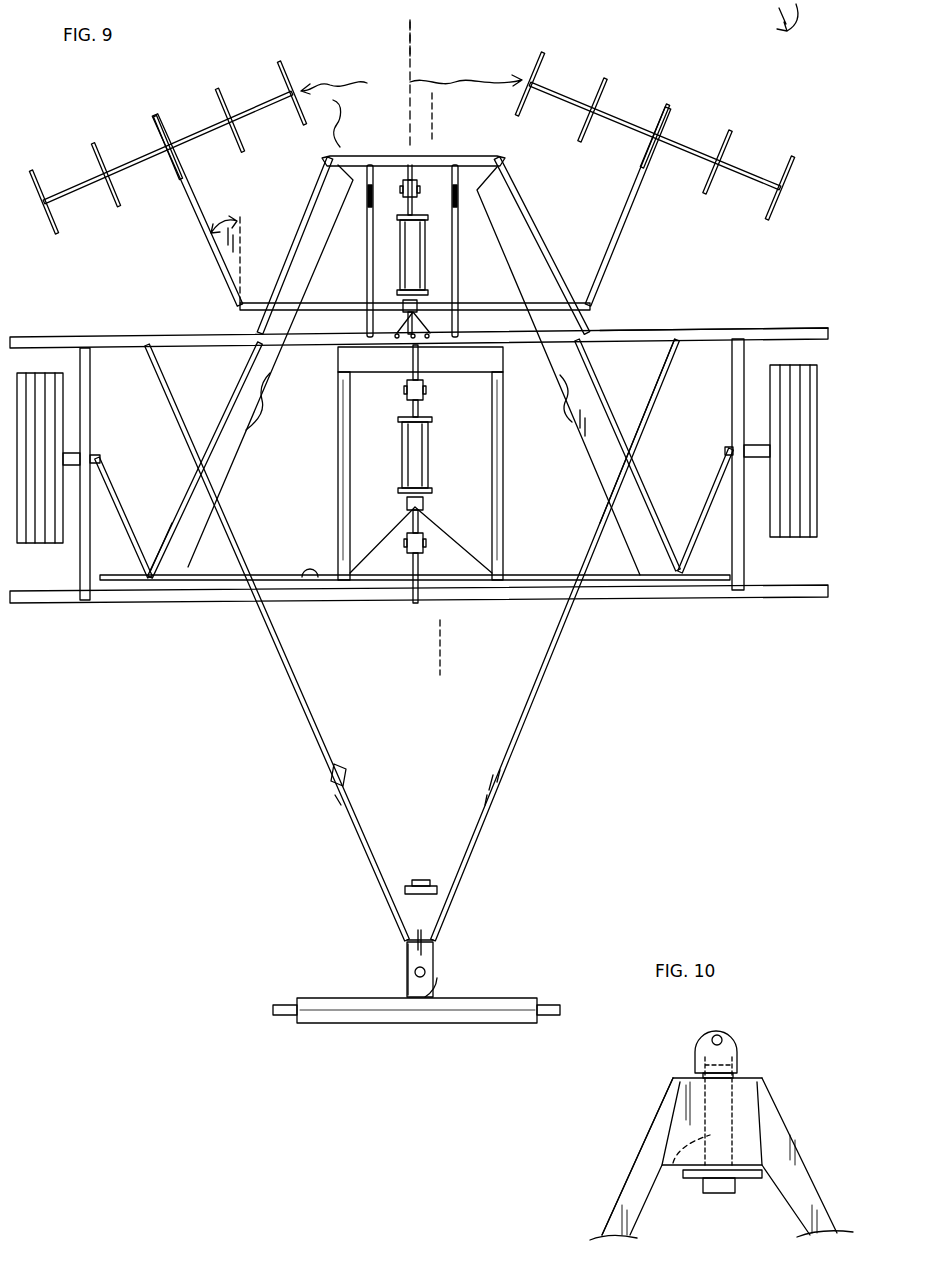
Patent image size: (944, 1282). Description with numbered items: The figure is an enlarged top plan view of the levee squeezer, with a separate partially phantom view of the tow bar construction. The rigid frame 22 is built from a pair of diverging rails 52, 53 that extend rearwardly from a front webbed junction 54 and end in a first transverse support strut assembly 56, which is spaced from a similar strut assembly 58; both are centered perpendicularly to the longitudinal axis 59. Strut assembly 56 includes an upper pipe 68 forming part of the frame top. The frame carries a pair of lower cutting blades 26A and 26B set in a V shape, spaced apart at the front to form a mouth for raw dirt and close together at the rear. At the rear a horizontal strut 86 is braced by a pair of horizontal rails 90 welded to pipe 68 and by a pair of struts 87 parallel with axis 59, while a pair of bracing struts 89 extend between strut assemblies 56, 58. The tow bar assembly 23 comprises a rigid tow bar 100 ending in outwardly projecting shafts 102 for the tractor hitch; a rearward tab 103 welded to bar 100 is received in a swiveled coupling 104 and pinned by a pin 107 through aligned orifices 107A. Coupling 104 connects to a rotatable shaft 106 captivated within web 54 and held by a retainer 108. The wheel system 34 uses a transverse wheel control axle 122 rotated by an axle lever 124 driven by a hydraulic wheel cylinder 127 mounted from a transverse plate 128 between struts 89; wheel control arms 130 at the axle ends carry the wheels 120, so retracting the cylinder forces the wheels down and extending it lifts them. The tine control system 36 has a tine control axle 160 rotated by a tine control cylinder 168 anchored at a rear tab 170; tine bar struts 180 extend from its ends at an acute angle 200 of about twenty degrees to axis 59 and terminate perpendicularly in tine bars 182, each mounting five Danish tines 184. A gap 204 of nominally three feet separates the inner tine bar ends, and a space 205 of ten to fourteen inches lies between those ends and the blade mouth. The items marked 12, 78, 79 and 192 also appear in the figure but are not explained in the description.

In FIG. 9, the section line 12 is at (425, 116).
In FIG. 9, the frame 22 is at (714, 316).
In FIG. 9, the tow bar assembly 23 is at (331, 947).
In FIG. 10, the tow bar assembly 23 is at (662, 1091).
In FIG. 9, the cutting blade 26A is at (570, 392).
In FIG. 9, the cutting blade 26B is at (257, 397).
In FIG. 9, the wheel system 34 is at (173, 555).
In FIG. 9, the tine control system 36 is at (337, 60).
In FIG. 9, the rail 52 is at (317, 712).
In FIG. 10, the rail 52 is at (635, 1186).
In FIG. 9, the rail 53 is at (523, 708).
In FIG. 10, the rail 53 is at (800, 1194).
In FIG. 9, the webbed junction 54 is at (445, 910).
In FIG. 10, the webbed junction 54 is at (742, 1108).
In FIG. 9, the first transverse support strut assembly 56 is at (668, 315).
In FIG. 9, the strut assembly 58 is at (641, 599).
In FIG. 9, the longitudinal axis 59 is at (413, 48).
In FIG. 9, the upper pipe 68 is at (113, 334).
In FIG. 9, the diagonal brace 78 is at (187, 500).
In FIG. 9, the diagonal brace 79 is at (638, 488).
In FIG. 9, the horizontal strut 86 is at (465, 162).
In FIG. 9, the strut 87 is at (367, 272).
In FIG. 9, the bracing strut 89 is at (347, 493).
In FIG. 9, the horizontal rail 90 is at (307, 217).
In FIG. 9, the tow bar 100 is at (460, 1008).
In FIG. 9, the shaft 102 is at (543, 1005).
In FIG. 9, the tab 103 is at (434, 988).
In FIG. 9, the swiveled coupling 104 is at (410, 958).
In FIG. 10, the swiveled coupling 104 is at (727, 1059).
In FIG. 9, the rotatable shaft 106 is at (410, 880).
In FIG. 10, the rotatable shaft 106 is at (713, 1189).
In FIG. 9, the pin 107 is at (414, 972).
In FIG. 10, the orifice 107A is at (712, 1040).
In FIG. 10, the retainer 108 is at (740, 1179).
In FIG. 9, the wheel 120 is at (815, 482).
In FIG. 9, the wheel control axle 122 is at (95, 452).
In FIG. 9, the axle lever 124 is at (415, 600).
In FIG. 9, the hydraulic wheel cylinder 127 is at (415, 447).
In FIG. 9, the transverse plate 128 is at (413, 356).
In FIG. 9, the wheel control arm 130 is at (130, 540).
In FIG. 9, the tine control axle 160 is at (515, 310).
In FIG. 9, the tine control cylinder 168 is at (400, 253).
In FIG. 9, the rear tab 170 is at (402, 164).
In FIG. 9, the tine bar strut 180 is at (197, 213).
In FIG. 9, the tine bar 182 is at (620, 122).
In FIG. 9, the Danish tine 184 is at (167, 127).
In FIG. 9, the boom 192 is at (125, 167).
In FIG. 9, the acute angle 200 is at (225, 233).
In FIG. 9, the gap 204 is at (411, 85).
In FIG. 9, the space 205 is at (320, 125).